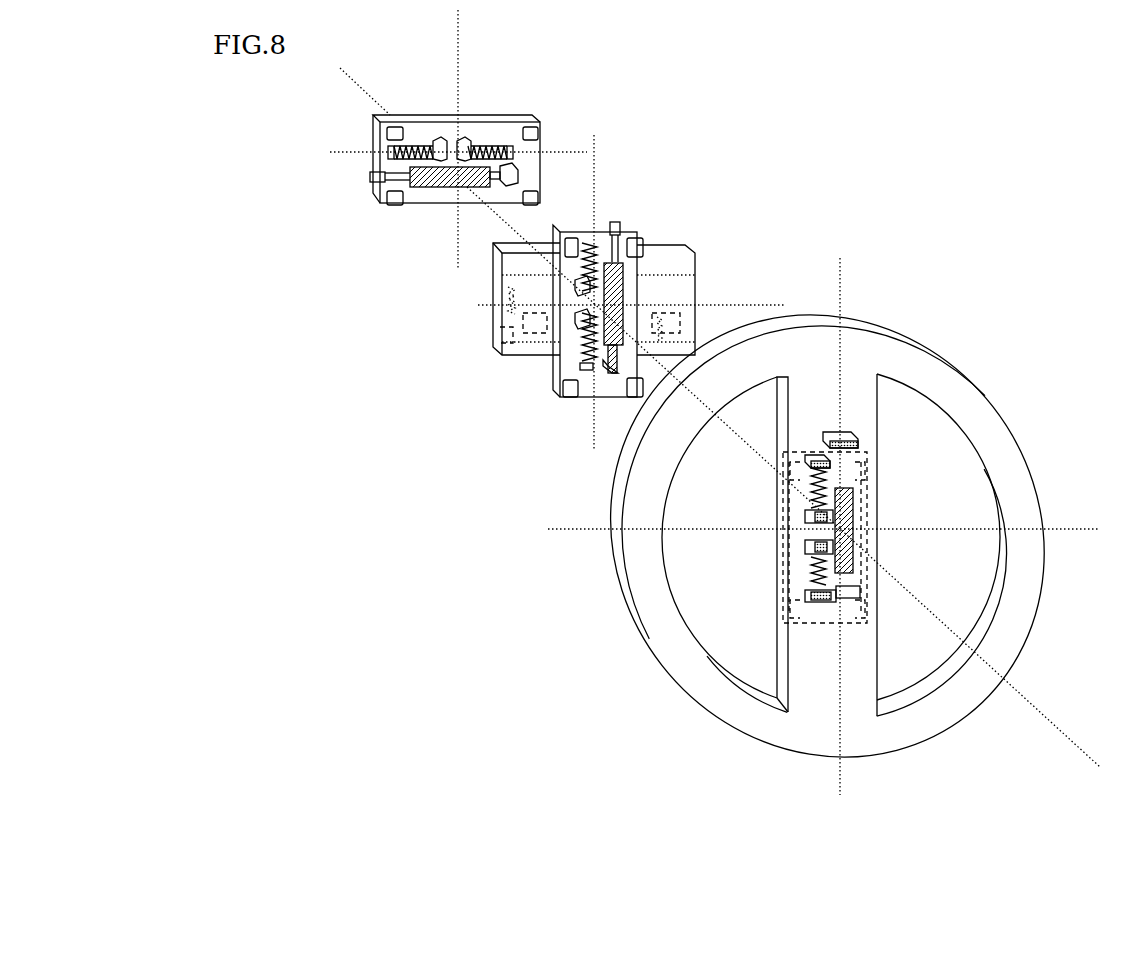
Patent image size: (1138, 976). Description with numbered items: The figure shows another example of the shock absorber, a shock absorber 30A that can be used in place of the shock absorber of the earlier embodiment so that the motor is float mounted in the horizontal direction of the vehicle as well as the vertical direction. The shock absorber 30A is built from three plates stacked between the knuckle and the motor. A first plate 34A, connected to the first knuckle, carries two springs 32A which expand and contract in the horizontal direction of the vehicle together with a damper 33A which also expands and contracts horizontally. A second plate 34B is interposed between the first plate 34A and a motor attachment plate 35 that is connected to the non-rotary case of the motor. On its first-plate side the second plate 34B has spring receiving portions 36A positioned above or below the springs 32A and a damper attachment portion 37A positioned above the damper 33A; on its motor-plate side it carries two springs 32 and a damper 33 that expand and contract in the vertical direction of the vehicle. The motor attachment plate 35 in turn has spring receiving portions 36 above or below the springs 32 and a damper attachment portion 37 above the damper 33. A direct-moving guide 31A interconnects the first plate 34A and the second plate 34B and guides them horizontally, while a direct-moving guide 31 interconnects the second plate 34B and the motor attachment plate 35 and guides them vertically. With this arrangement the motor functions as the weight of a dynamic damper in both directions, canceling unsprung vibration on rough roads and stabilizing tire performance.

The shock absorber 30A is at (823, 255).
The direct-moving guide 31 is at (637, 238).
The direct-moving guide 31A is at (532, 135).
The spring 32 is at (582, 272).
The spring 32A is at (417, 140).
The damper 33 is at (623, 277).
The damper 33A is at (433, 190).
The first plate 34A is at (510, 118).
The second plate 34B is at (645, 245).
The motor attachment plate 35 is at (935, 368).
The spring receiving portion 36 is at (810, 456).
The spring receiving portion 36A is at (662, 318).
The damper attachment portion 37 is at (850, 432).
The damper attachment portion 37A is at (453, 323).